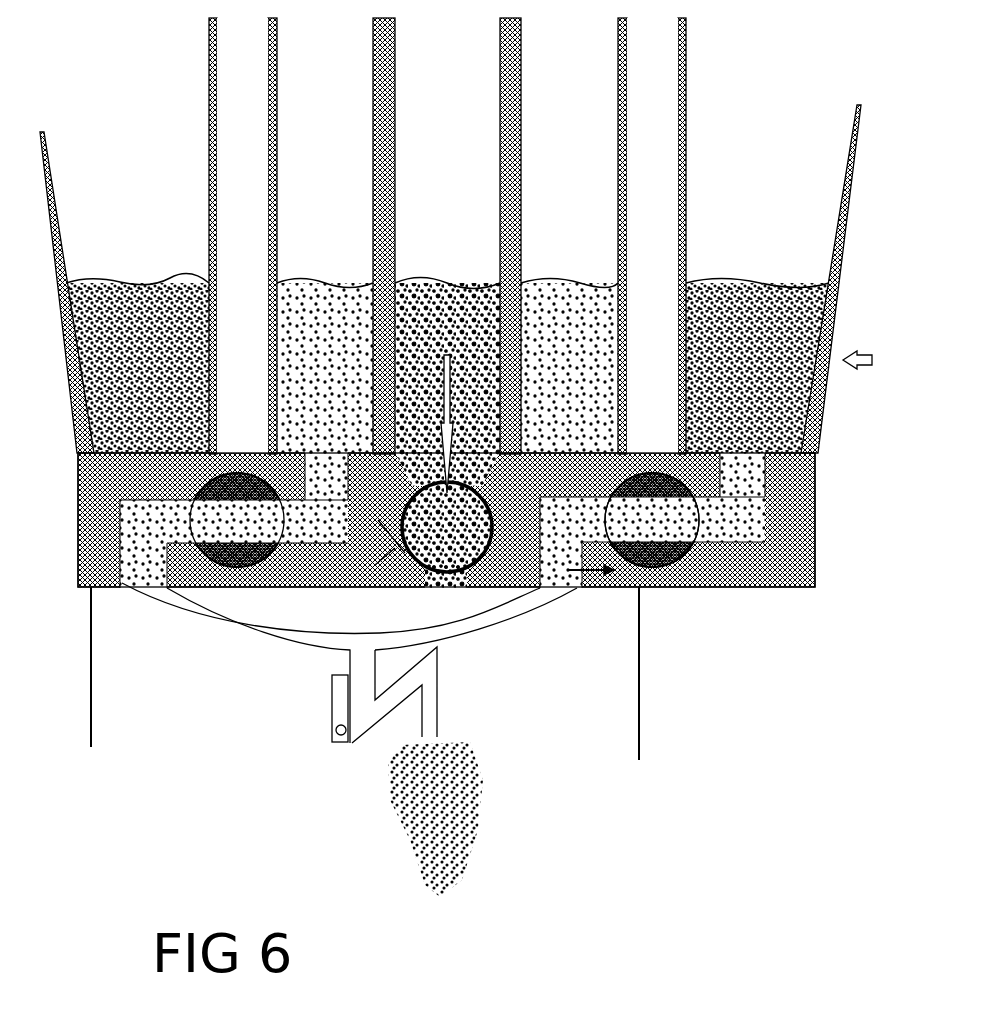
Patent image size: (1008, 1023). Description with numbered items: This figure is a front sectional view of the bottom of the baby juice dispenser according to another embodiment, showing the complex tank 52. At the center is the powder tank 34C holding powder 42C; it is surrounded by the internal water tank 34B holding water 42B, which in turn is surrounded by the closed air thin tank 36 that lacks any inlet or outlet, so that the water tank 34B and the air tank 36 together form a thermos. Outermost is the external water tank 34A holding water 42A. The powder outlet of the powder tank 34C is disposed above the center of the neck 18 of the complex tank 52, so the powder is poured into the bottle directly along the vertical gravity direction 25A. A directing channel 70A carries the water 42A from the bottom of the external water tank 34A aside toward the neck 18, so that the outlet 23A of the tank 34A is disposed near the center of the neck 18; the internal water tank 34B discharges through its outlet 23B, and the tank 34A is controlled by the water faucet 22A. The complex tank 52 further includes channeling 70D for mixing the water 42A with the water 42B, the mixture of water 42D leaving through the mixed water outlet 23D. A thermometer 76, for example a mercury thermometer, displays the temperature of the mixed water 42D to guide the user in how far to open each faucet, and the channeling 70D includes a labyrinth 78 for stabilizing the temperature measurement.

The neck of complex tank 18 is at (88, 685).
The water faucet 22A is at (663, 560).
The outlet of water tank 34A 23A is at (610, 575).
The outlet of water tank 34B 23B is at (143, 570).
The mixed water outlet 23D is at (427, 747).
The vertical gravity direction 25A is at (452, 405).
The external water tank 34A is at (423, 288).
The internal water tank 34B is at (437, 294).
The powder tank 34C is at (447, 290).
The closed air thin tank 36 is at (447, 235).
The water of tank 34A 42A is at (735, 307).
The water of tank 34B 42B is at (305, 305).
The powder 42C is at (418, 310).
The mixture of water 42A and 42B 42D is at (460, 828).
The complex tank 52 is at (879, 362).
The horizontal water channel 70A is at (718, 517).
The channeling for mixing water 70D is at (327, 642).
The thermometer 76 is at (338, 702).
The labyrinth 78 is at (390, 715).